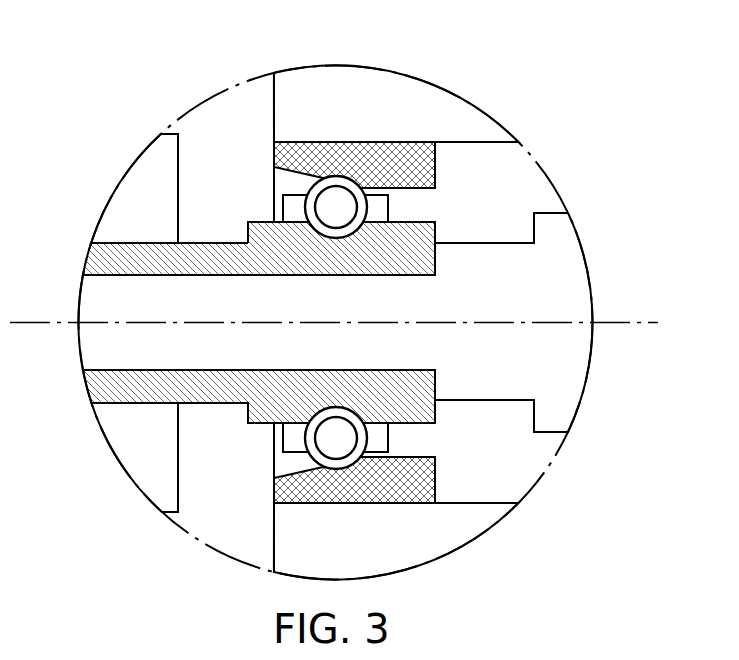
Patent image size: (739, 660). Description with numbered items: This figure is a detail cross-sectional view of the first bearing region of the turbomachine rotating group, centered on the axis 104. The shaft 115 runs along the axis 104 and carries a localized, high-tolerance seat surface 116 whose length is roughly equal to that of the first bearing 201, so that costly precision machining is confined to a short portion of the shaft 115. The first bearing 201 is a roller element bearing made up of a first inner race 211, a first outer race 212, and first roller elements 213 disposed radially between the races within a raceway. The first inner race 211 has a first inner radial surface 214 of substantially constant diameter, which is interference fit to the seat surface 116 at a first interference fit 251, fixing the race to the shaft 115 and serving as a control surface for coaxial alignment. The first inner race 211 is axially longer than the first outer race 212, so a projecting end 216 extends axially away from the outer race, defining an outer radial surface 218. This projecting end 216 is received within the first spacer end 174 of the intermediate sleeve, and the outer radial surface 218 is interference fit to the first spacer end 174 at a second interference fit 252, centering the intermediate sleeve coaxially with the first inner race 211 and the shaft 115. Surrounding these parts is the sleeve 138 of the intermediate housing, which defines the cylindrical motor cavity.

The axis 104 is at (633, 321).
The shaft 115 is at (352, 360).
The seat surface 116 is at (198, 372).
The sleeve 138 is at (388, 82).
The first spacer end 174 is at (128, 456).
The first bearing 201 is at (262, 136).
The first inner race 211 is at (427, 233).
The first outer race 212 is at (427, 165).
The first roller elements 213 is at (336, 205).
The first inner radial surface 214 is at (337, 276).
The projecting end 216 is at (98, 388).
The outer radial surface 218 is at (145, 240).
The first interference fit 251 is at (270, 272).
The second interference fit 252 is at (125, 237).